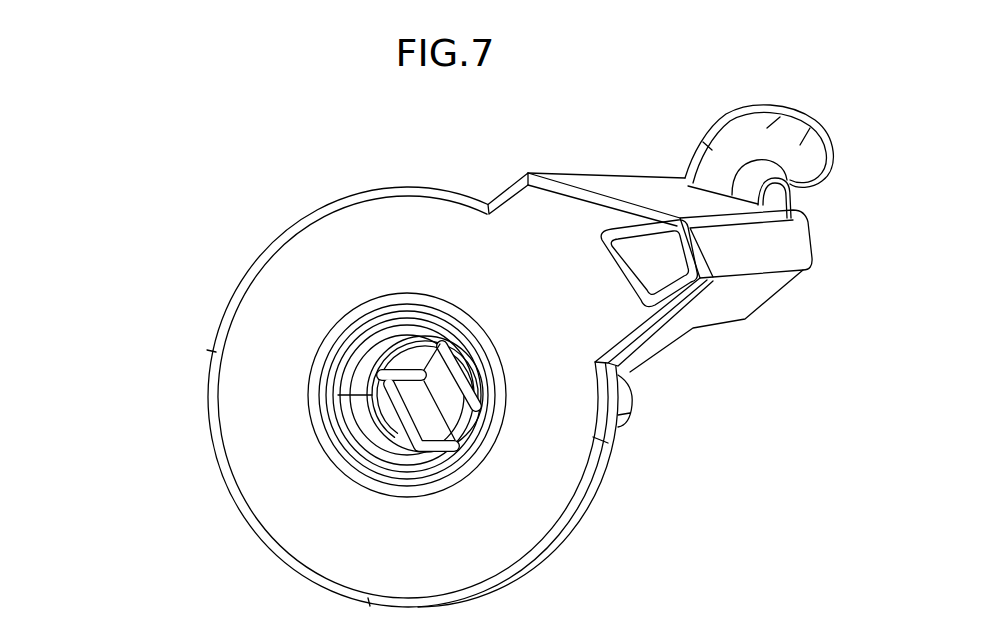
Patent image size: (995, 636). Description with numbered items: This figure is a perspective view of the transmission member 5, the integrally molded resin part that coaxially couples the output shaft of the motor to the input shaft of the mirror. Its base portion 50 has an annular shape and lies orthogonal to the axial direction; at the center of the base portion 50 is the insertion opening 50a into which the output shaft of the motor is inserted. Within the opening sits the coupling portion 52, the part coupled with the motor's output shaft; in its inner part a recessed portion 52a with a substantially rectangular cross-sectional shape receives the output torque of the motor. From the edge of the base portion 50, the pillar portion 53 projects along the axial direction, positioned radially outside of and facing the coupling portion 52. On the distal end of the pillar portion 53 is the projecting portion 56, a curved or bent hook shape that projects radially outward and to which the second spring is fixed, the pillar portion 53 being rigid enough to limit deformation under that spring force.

The transmission member 5 is at (128, 176).
The base portion 50 is at (273, 224).
The insertion opening 50a is at (316, 397).
The coupling portion 52 is at (375, 333).
The recessed portion 52a is at (419, 385).
The pillar portion 53 is at (634, 193).
The projecting portion 56 is at (750, 148).